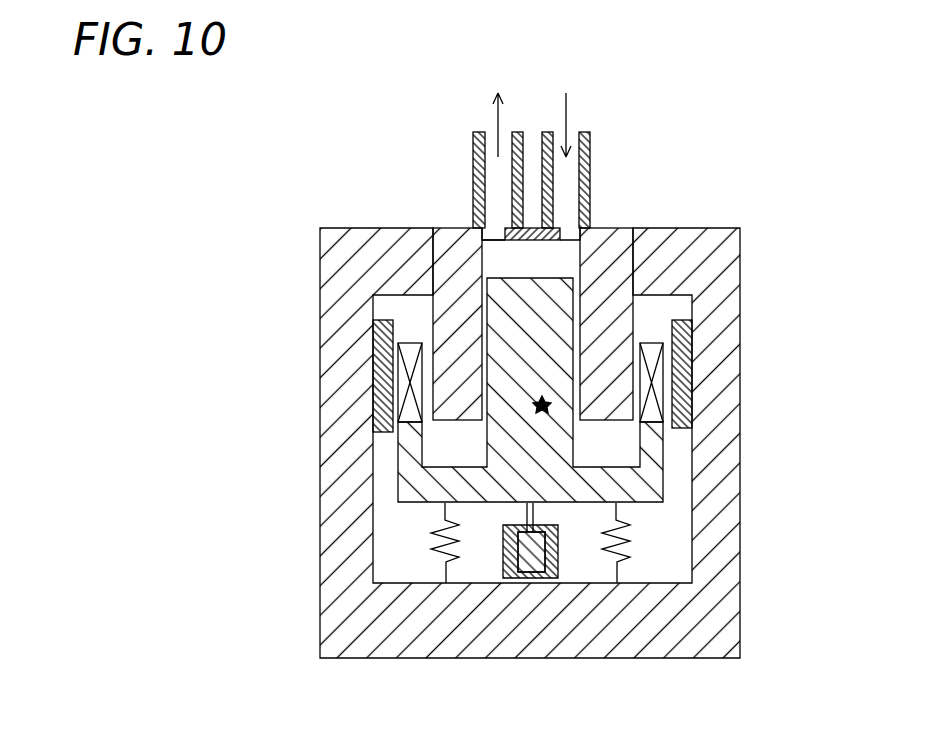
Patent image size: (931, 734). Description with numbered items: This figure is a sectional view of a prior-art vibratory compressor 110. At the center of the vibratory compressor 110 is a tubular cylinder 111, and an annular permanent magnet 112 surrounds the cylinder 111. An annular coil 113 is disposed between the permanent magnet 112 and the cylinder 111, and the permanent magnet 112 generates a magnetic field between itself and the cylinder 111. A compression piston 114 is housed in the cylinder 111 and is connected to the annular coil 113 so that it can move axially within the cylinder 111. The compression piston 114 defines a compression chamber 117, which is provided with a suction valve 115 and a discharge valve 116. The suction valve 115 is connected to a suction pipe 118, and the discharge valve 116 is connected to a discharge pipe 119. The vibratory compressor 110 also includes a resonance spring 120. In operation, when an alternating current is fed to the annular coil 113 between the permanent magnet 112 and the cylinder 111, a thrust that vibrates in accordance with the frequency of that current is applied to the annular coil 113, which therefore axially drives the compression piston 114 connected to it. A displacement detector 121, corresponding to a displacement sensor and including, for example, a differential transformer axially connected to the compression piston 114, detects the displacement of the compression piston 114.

The vibratory compressor 110 is at (737, 203).
The cylinder 111 is at (445, 310).
The permanent magnet 112 is at (385, 355).
The annular coil 113 is at (410, 387).
The compression piston 114 is at (540, 310).
The suction valve 115 is at (568, 238).
The discharge valve 116 is at (501, 236).
The compression chamber 117 is at (540, 262).
The suction pipe 118 is at (590, 171).
The discharge pipe 119 is at (486, 171).
The resonance spring 120 is at (437, 558).
The displacement detector 121 is at (558, 560).